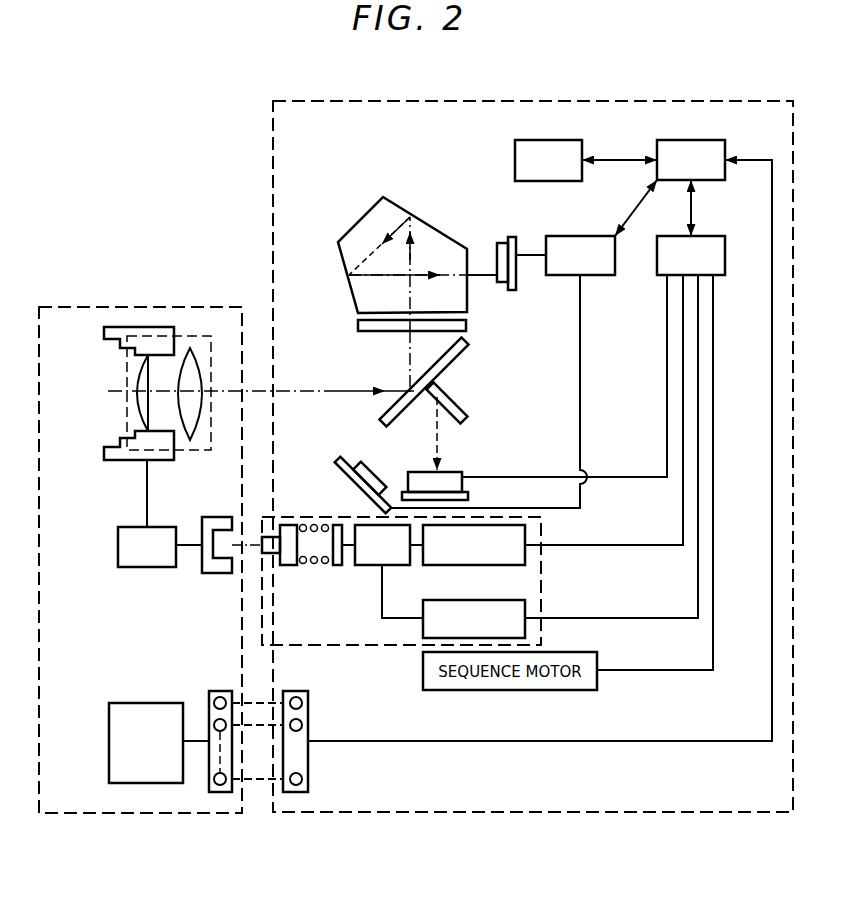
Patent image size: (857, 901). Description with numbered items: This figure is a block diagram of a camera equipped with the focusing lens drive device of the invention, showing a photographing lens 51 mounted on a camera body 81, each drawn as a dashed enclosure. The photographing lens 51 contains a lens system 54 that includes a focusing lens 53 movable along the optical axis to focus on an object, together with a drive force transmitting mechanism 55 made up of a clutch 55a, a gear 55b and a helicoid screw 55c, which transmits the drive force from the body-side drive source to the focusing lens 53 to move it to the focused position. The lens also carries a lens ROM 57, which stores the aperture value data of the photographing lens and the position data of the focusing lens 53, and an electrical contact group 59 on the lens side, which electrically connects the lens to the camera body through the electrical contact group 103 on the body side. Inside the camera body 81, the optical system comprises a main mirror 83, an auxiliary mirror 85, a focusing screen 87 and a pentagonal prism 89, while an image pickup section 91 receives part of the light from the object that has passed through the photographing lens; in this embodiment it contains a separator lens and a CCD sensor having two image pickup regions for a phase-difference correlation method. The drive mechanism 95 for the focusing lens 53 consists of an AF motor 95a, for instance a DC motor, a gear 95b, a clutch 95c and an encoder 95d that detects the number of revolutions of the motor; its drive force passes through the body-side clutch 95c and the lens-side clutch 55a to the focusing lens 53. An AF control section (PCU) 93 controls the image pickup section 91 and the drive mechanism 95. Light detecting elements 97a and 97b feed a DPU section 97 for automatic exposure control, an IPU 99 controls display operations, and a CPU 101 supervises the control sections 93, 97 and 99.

The camera body 81 is at (364, 100).
The photographing lens 51 is at (185, 304).
The focusing lens 53 is at (142, 403).
The lens system 54 is at (125, 371).
The drive force transmitting mechanism 55 is at (152, 526).
The clutch 55a is at (208, 558).
The gear 55b is at (137, 527).
The helicoid screw 55c is at (145, 463).
The lens ROM 57 is at (150, 703).
The electrical contact group on the lens side 59 is at (220, 691).
The electrical contact group on the body side 103 is at (310, 706).
The pentagonal prism 89 is at (432, 228).
The focusing screen 87 is at (466, 326).
The main mirror 83 is at (467, 346).
The auxiliary mirror 85 is at (464, 409).
The image pickup section 91 is at (455, 472).
The light detecting element 97a is at (380, 474).
The light detecting element 97b is at (510, 237).
The DPU (automatic exposure control) section 97 is at (567, 236).
The IPU (display control section) 99 is at (566, 140).
The CPU (central control unit) 101 is at (705, 140).
The AF control section (PCU) 93 is at (710, 236).
The drive mechanism 95 is at (437, 581).
The AF motor 95a is at (466, 566).
The gear 95b is at (372, 566).
The clutch 95c is at (303, 568).
The encoder 95d is at (456, 600).